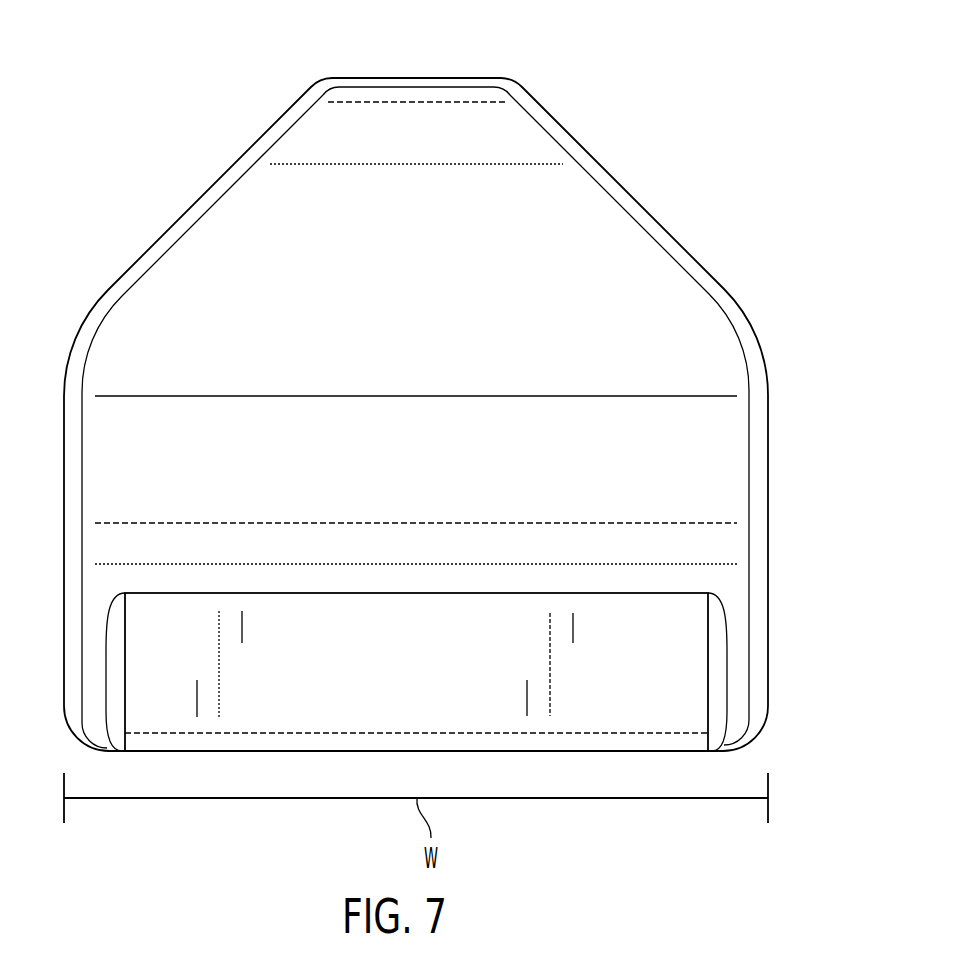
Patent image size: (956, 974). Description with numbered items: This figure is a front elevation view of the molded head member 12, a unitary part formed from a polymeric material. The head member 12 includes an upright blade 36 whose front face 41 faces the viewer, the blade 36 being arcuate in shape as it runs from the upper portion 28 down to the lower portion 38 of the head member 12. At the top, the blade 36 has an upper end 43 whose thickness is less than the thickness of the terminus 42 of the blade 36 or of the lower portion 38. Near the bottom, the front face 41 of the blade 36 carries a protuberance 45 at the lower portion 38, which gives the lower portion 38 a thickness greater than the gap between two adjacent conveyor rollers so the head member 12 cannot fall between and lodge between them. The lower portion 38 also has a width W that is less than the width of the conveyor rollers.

The molded head member 12 is at (112, 183).
The upper portion 28 is at (700, 150).
The blade 36 is at (768, 432).
The lower portion 38 is at (788, 724).
The front face 41 is at (425, 462).
The terminus 42 is at (210, 752).
The upper end 43 is at (356, 79).
The protuberance 45 is at (683, 683).